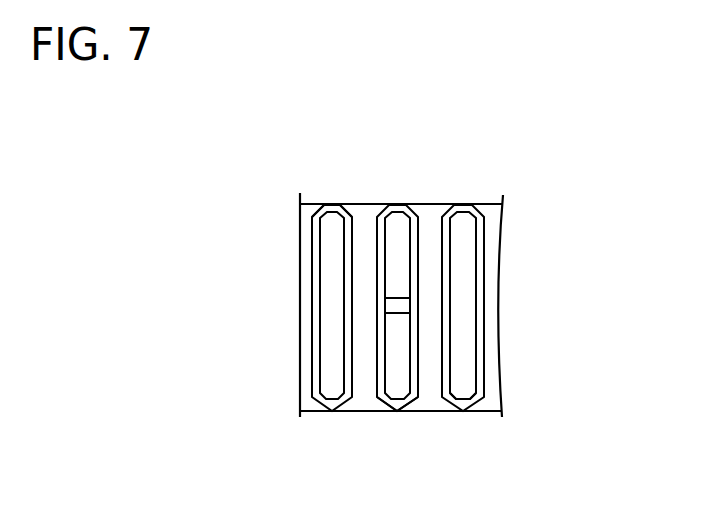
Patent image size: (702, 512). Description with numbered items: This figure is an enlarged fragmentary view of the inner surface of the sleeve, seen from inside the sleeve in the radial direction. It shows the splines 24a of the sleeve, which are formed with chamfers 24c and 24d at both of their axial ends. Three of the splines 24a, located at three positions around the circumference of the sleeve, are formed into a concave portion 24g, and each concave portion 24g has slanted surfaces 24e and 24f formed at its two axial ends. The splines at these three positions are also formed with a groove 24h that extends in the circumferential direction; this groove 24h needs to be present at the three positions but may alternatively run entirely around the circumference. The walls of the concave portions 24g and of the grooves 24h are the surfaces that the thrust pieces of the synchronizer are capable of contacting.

The splines 24a is at (338, 204).
The chamfer 24c is at (318, 203).
The chamfer 24d is at (348, 203).
The slanted surface 24e is at (463, 390).
The slanted surface 24f is at (455, 222).
The concave portion 24g is at (463, 344).
The groove 24h is at (400, 305).